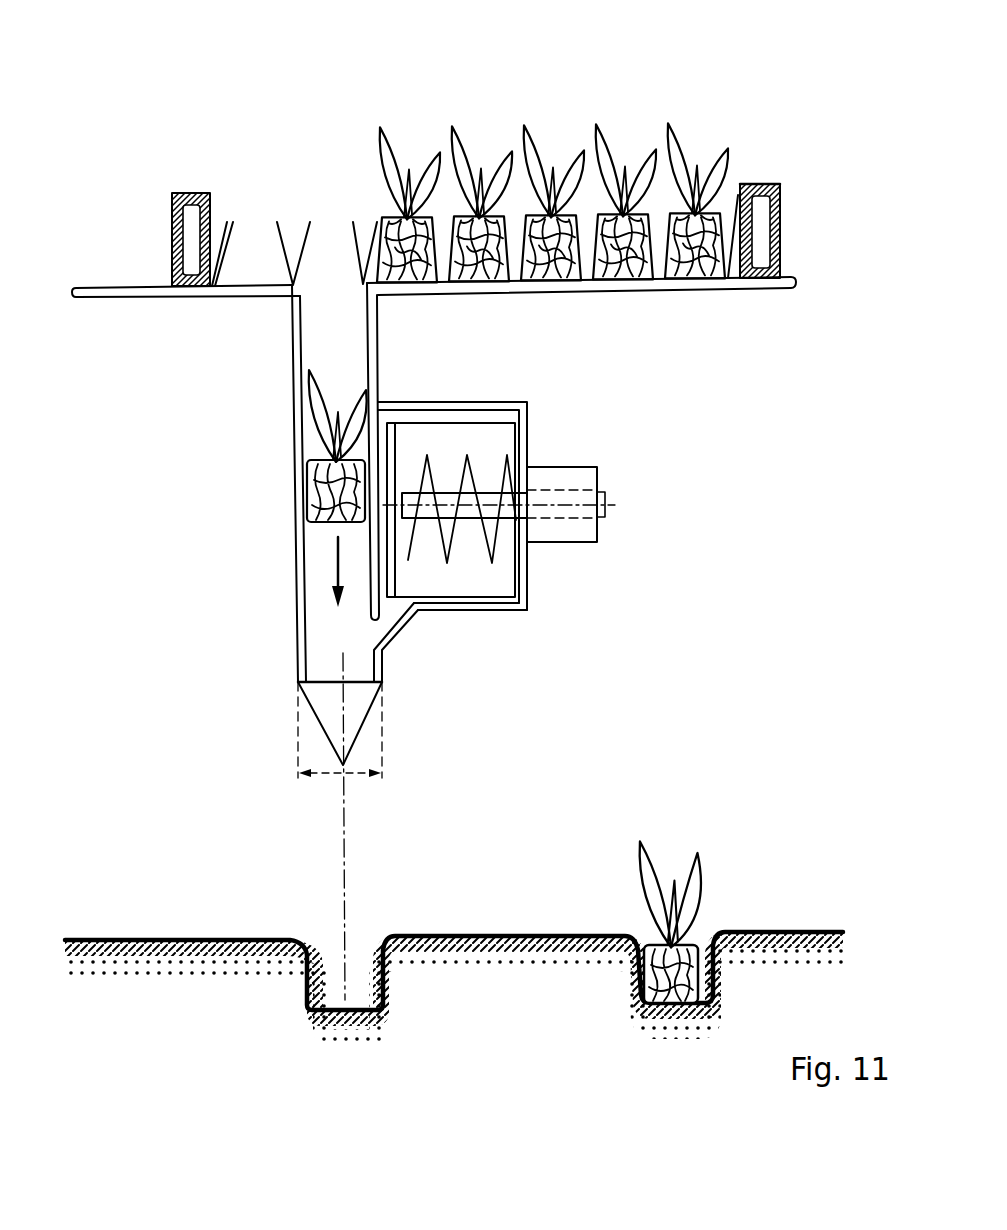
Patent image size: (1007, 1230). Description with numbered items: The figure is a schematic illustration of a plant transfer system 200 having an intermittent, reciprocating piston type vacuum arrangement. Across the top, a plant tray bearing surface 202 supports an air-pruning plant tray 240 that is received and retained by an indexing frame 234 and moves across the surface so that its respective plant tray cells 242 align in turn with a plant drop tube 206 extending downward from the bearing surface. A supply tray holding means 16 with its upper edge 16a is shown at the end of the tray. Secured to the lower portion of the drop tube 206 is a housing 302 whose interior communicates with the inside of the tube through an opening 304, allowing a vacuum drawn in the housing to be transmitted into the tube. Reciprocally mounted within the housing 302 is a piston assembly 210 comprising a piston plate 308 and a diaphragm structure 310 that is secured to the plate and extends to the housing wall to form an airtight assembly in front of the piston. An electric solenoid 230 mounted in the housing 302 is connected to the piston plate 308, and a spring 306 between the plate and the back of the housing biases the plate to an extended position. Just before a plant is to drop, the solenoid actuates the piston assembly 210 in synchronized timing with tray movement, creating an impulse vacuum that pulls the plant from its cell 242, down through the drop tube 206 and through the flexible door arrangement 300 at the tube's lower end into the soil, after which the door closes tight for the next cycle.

The transplanting apparatus 200 is at (134, 146).
The plant tray bearing surface 202 is at (250, 297).
The plant drop tube 206 is at (380, 366).
The piston assembly 210 is at (666, 416).
The electric solenoid 230 is at (597, 477).
The indexing frame 234 is at (172, 259).
The plant tray 240 is at (516, 72).
The plant tray cells 242 is at (732, 212).
The supply tray holding means 16 is at (778, 240).
The tray side member top edge 16a is at (749, 184).
The flexible door arrangement 300 is at (313, 712).
The housing 302 is at (528, 604).
The opening 304 is at (377, 630).
The spring 306 is at (427, 467).
The piston plate 308 is at (403, 443).
The diaphragm structure 310 is at (527, 432).